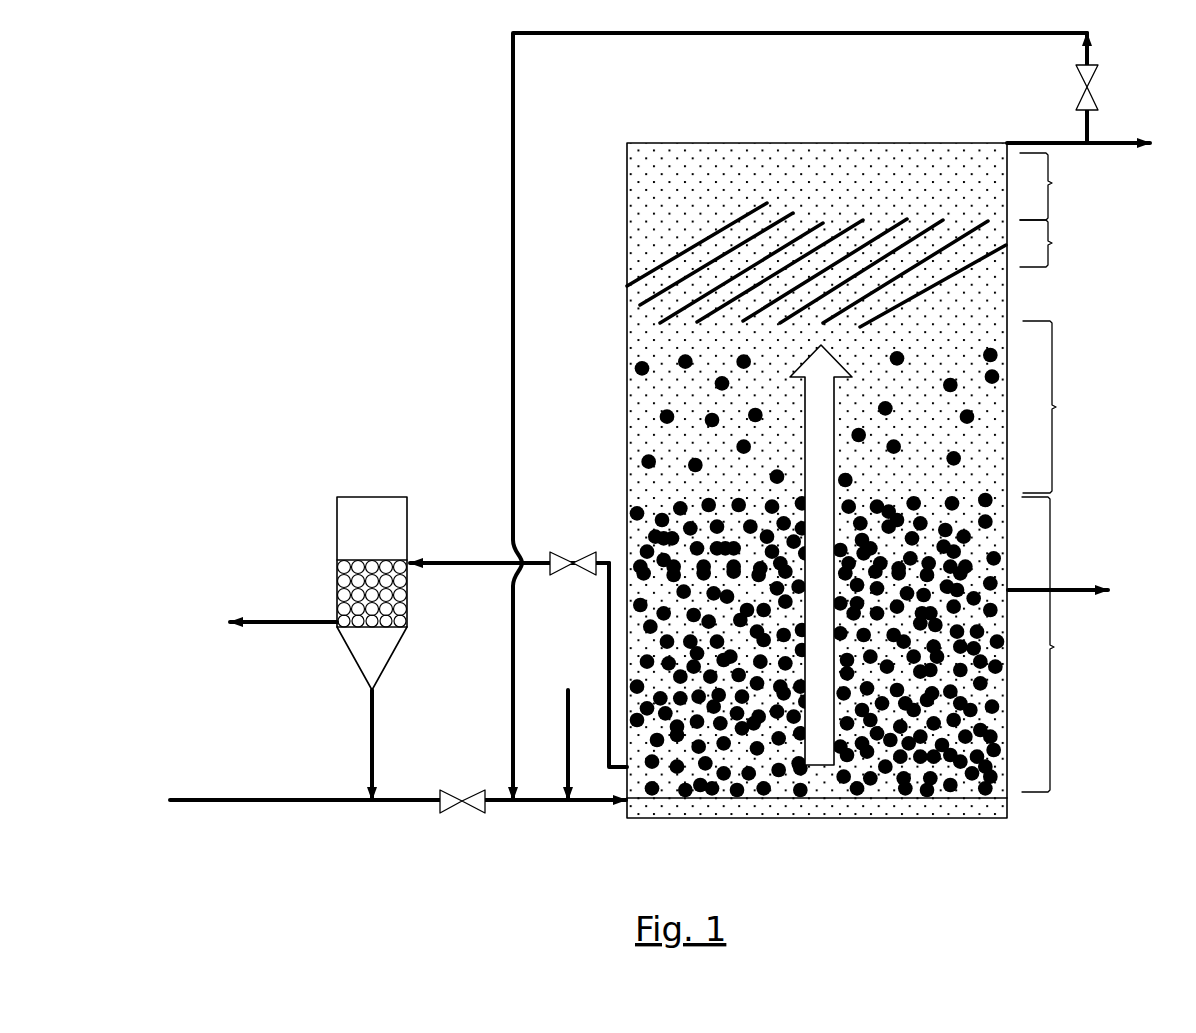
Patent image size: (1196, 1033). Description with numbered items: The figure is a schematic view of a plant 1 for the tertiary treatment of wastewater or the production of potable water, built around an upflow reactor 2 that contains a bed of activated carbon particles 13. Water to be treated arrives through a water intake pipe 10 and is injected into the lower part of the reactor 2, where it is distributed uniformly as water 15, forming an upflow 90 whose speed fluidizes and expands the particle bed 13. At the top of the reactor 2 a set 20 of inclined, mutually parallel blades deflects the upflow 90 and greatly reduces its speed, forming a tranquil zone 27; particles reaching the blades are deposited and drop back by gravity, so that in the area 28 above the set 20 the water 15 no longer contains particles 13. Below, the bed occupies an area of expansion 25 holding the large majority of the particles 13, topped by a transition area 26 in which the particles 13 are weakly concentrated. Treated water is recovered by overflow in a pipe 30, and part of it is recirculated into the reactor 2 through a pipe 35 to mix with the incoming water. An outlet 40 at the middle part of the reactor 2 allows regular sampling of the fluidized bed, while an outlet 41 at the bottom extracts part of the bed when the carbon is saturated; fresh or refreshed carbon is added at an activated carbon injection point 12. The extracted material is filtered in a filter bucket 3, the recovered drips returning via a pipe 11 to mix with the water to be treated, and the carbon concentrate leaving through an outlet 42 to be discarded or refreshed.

The plant 1 is at (313, 156).
The reactor 2 is at (1061, 845).
The filter bucket 3 is at (313, 498).
The water intake pipe 10 is at (235, 798).
The pipe 11 is at (370, 748).
The activated carbon injection point 12 is at (567, 690).
The activated carbon particles 13 is at (660, 418).
The water 15 is at (645, 220).
The set of blades 20 is at (984, 279).
The area of expansion 25 is at (1052, 647).
The transition area 26 is at (1054, 407).
The tranquil zone 27 is at (1050, 243).
The area 28 is at (1050, 183).
The pipe 30 is at (1066, 142).
The pipe 35 is at (512, 145).
The outlet 40 is at (1009, 585).
The outlet 41 is at (622, 800).
The outlet 42 is at (283, 625).
The upflow 90 is at (820, 750).